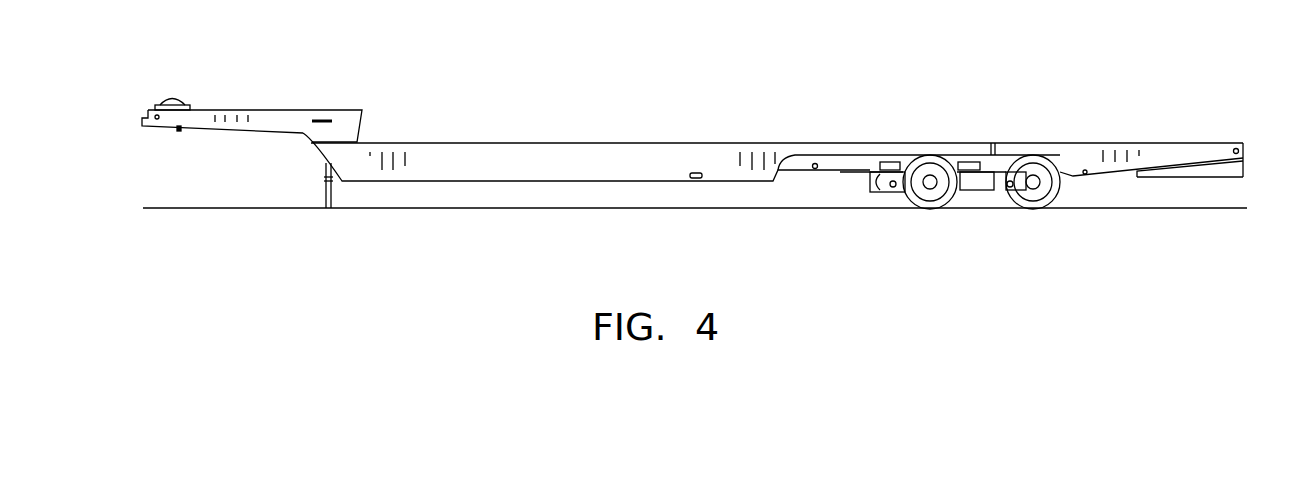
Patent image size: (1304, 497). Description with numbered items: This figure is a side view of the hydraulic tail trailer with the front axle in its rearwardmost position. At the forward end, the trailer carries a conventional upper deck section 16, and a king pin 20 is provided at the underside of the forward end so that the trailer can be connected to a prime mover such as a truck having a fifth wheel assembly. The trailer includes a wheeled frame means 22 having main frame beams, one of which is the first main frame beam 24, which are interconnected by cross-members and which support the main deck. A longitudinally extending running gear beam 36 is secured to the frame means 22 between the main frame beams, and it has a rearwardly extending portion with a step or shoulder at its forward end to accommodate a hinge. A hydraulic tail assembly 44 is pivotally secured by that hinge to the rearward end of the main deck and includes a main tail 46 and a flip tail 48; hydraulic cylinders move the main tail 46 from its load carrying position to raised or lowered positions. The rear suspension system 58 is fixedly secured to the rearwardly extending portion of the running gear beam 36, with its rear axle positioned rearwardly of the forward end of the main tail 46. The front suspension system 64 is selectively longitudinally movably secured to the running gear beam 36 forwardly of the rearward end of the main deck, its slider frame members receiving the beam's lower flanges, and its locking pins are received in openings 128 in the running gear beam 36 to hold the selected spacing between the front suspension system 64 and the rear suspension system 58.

The upper deck section 16 is at (278, 110).
The king pin 20 is at (178, 131).
The wheeled frame means 22 is at (773, 233).
The first main frame beam 24 is at (562, 170).
The running gear beam 36 is at (833, 172).
The hydraulic tail assembly 44 is at (1151, 162).
The main tail 46 is at (1158, 138).
The flip tail 48 is at (1193, 186).
The rear suspension system 58 is at (1042, 210).
The front suspension system 64 is at (938, 210).
The opening 128 is at (814, 169).